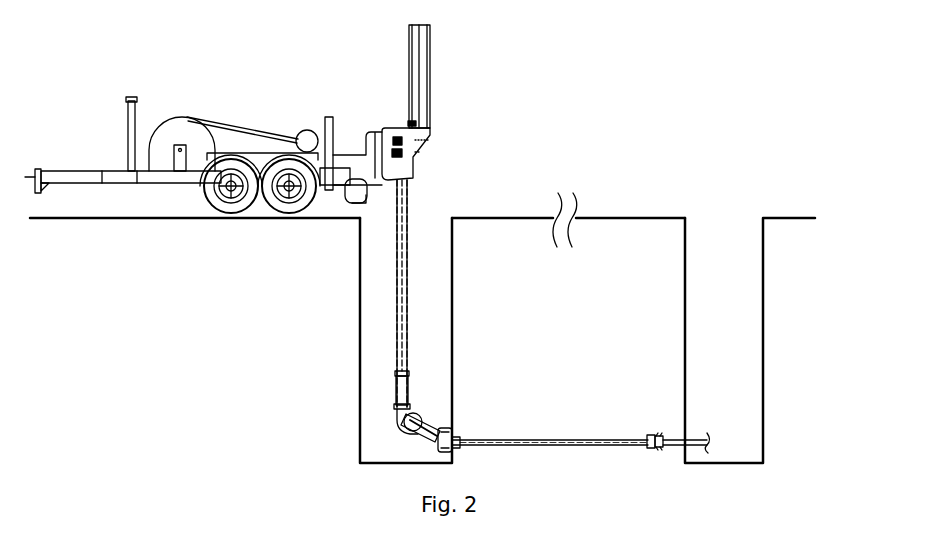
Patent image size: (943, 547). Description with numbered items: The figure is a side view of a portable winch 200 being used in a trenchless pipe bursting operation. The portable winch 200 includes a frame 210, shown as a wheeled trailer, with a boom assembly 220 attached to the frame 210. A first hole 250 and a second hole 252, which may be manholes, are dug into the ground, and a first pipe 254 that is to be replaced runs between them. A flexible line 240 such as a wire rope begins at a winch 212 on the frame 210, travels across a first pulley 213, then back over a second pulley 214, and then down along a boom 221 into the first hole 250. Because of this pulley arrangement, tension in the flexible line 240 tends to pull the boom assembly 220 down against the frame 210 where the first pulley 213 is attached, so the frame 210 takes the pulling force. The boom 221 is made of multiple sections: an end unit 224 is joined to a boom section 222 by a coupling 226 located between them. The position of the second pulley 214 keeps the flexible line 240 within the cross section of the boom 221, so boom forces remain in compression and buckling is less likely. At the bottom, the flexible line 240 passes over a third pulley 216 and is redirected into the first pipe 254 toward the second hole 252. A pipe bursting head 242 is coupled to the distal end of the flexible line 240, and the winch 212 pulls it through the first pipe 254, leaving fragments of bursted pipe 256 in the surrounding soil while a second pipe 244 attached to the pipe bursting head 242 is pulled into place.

The portable winch 200 is at (266, 93).
The frame 210 is at (157, 178).
The winch 212 is at (304, 128).
The first pulley 213 is at (352, 193).
The second pulley 214 is at (380, 181).
The boom assembly 220 is at (444, 132).
The boom 221 is at (428, 227).
The boom section 222 is at (393, 272).
The end unit 224 is at (401, 391).
The coupling 226 is at (404, 372).
The third pulley 216 is at (423, 413).
The first pipe 254 is at (473, 441).
The flexible line 240 is at (518, 441).
The pipe bursting head 242 is at (652, 447).
The second pipe 244 is at (693, 440).
The fragments of bursted pipe 256 is at (663, 448).
The first hole 250 is at (360, 403).
The second hole 252 is at (763, 360).